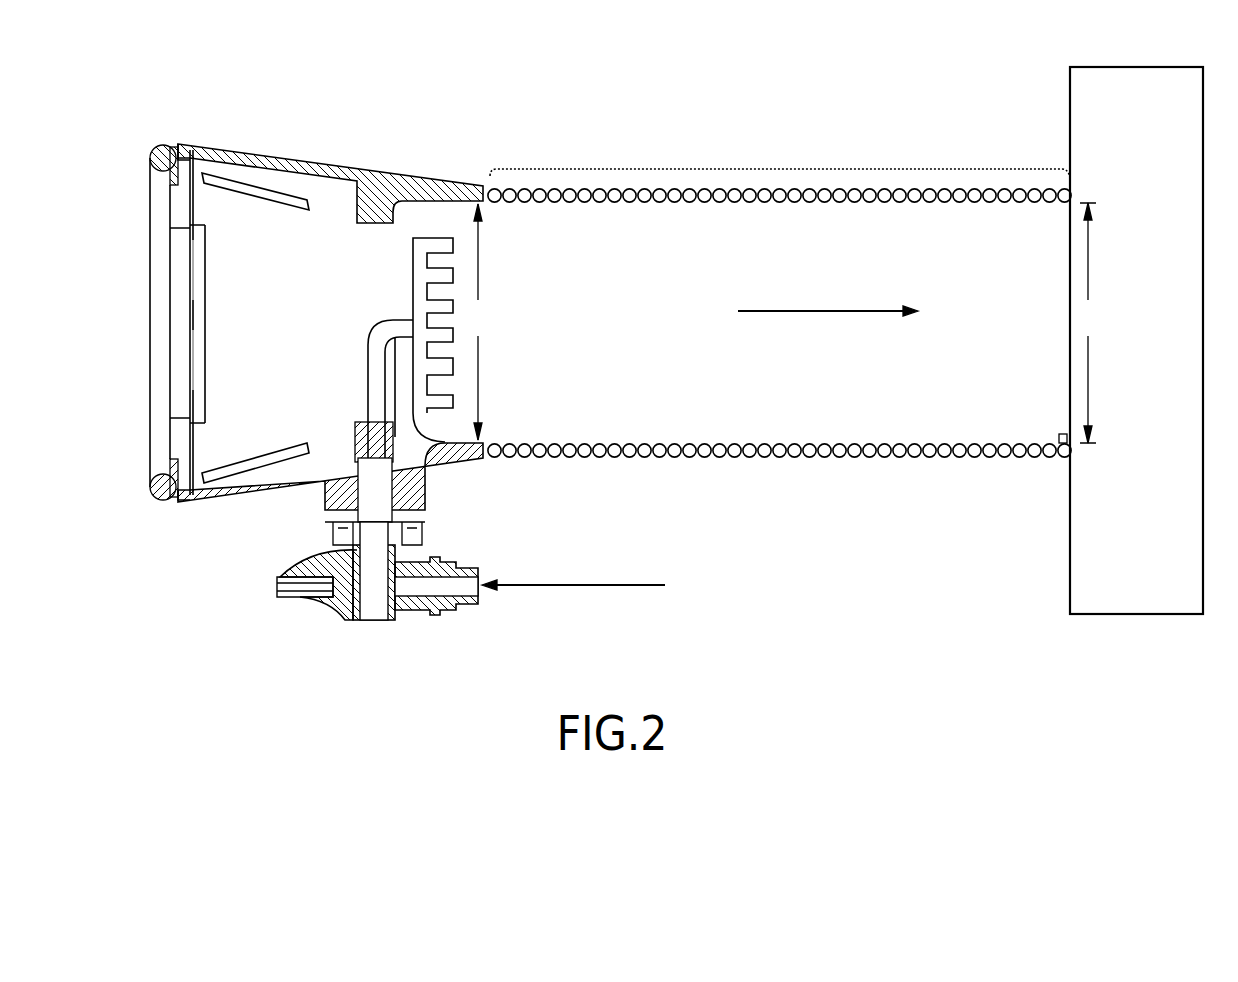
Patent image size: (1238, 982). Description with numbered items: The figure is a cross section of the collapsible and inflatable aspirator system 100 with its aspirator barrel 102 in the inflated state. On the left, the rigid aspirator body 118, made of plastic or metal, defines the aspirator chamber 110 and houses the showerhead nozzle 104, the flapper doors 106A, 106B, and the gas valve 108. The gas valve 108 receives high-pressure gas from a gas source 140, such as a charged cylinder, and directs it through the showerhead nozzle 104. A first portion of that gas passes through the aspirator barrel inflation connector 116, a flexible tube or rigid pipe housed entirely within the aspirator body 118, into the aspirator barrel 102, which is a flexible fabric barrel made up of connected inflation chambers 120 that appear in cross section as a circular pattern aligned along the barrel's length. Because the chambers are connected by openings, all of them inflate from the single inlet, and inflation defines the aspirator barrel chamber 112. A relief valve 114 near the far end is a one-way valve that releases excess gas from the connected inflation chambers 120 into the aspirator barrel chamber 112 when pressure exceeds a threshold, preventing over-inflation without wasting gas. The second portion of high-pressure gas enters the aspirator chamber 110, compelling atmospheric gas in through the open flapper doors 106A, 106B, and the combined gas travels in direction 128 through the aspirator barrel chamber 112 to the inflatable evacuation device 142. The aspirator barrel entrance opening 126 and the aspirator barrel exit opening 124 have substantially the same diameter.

The collapsible and inflatable aspirator system 100 is at (780, 106).
The aspirator barrel 102 is at (985, 144).
The showerhead nozzle 104 is at (437, 242).
The flapper door 106A is at (217, 181).
The flapper door 106B is at (228, 465).
The gas valve 108 is at (360, 620).
The aspirator chamber 110 is at (240, 333).
The aspirator barrel chamber 112 is at (888, 402).
The relief valve 114 is at (1060, 440).
The aspirator barrel inflation connector 116 is at (493, 440).
The aspirator body 118 is at (383, 195).
The connected inflation chambers 120 is at (803, 168).
The aspirator barrel exit opening 124 is at (1088, 323).
The aspirator barrel entrance opening 126 is at (480, 322).
The direction 128 is at (822, 311).
The gas source 140 is at (578, 585).
The inflatable evacuation device 142 is at (1128, 615).